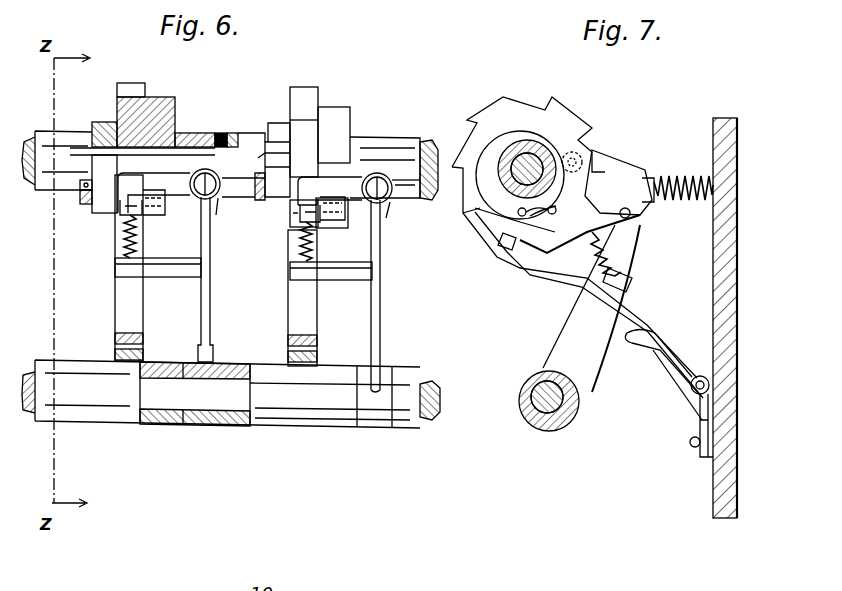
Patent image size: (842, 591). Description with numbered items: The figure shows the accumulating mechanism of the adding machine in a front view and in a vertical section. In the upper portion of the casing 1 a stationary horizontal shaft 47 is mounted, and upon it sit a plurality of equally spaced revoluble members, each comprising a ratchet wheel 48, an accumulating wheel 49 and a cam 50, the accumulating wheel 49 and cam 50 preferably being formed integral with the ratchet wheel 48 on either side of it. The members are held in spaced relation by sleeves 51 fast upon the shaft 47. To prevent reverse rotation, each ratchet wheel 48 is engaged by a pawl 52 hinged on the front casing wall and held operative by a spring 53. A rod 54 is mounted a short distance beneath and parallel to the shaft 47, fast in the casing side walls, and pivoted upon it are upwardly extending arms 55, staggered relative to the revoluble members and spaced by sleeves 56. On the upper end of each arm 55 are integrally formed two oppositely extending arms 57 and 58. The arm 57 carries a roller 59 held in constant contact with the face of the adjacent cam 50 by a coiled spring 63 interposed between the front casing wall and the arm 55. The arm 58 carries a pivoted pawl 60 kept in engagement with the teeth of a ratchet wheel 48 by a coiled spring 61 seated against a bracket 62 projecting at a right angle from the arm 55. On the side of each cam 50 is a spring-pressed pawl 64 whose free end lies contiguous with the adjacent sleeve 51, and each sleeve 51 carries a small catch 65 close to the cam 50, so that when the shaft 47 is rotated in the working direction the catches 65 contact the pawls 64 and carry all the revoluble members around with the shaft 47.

In FIG. 7, the casing 1 is at (728, 128).
In FIG. 6, the stationary horizontal shaft 47 is at (434, 142).
In FIG. 7, the stationary horizontal shaft 47 is at (540, 150).
In FIG. 6, the ratchet wheel 48 is at (133, 83).
In FIG. 7, the ratchet wheel 48 is at (525, 110).
In FIG. 6, the accumulating wheel 49 is at (155, 108).
In FIG. 6, the cam 50 is at (103, 122).
In FIG. 7, the cam 50 is at (520, 138).
In FIG. 6, the sleeve 51 is at (205, 133).
In FIG. 7, the sleeve 51 is at (515, 185).
In FIG. 6, the pawl 52 is at (135, 316).
In FIG. 7, the pawl 52 is at (535, 277).
In FIG. 6, the spring 53 is at (143, 347).
In FIG. 7, the spring 53 is at (672, 362).
In FIG. 6, the rod 54 is at (438, 412).
In FIG. 7, the rod 54 is at (535, 428).
In FIG. 6, the upwardly extending arm 55 is at (211, 308).
In FIG. 7, the upwardly extending arm 55 is at (576, 375).
In FIG. 6, the sleeve 56 is at (318, 410).
In FIG. 7, the sleeve 56 is at (562, 430).
In FIG. 6, the arm 57 is at (247, 200).
In FIG. 7, the arm 57 is at (620, 180).
In FIG. 6, the arm 58 is at (180, 173).
In FIG. 7, the arm 58 is at (645, 218).
In FIG. 6, the roller 59 is at (276, 152).
In FIG. 7, the roller 59 is at (583, 160).
In FIG. 6, the pawl 60 is at (122, 214).
In FIG. 7, the pawl 60 is at (506, 250).
In FIG. 6, the coiled spring 61 is at (138, 246).
In FIG. 7, the coiled spring 61 is at (603, 258).
In FIG. 6, the bracket 62 is at (155, 270).
In FIG. 7, the bracket 62 is at (633, 282).
In FIG. 6, the coiled spring 63 is at (218, 200).
In FIG. 7, the coiled spring 63 is at (686, 202).
In FIG. 7, the spring-pressed pawl 64 is at (520, 217).
In FIG. 6, the catch 65 is at (80, 190).
In FIG. 7, the catch 65 is at (558, 210).